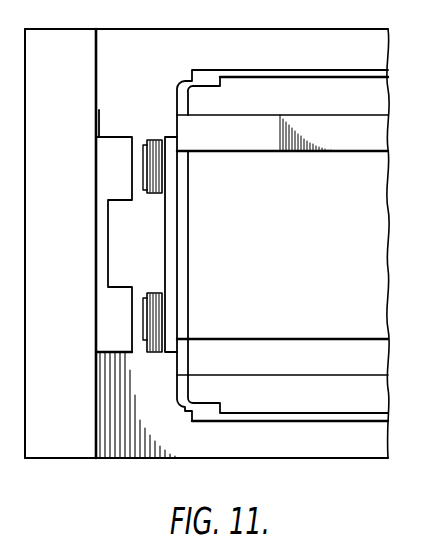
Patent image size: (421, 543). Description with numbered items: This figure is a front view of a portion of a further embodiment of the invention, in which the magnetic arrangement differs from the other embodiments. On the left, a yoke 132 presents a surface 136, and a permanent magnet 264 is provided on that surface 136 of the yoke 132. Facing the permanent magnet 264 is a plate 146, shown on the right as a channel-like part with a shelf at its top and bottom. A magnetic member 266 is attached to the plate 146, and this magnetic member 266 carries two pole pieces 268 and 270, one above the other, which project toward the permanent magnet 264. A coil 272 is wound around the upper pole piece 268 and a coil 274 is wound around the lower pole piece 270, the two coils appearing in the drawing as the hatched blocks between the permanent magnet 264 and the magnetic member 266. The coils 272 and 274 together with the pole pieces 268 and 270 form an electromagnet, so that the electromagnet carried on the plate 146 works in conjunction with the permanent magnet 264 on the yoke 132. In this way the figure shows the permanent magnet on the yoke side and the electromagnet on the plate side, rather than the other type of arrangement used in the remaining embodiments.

The yoke 132 is at (55, 433).
The surface 136 is at (95, 422).
The plate 146 is at (185, 84).
The permanent magnet 264 is at (115, 318).
The magnetic member 266 is at (170, 242).
The pole piece 268 is at (144, 147).
The pole piece 270 is at (143, 293).
The coil 272 is at (152, 196).
The coil 274 is at (157, 322).